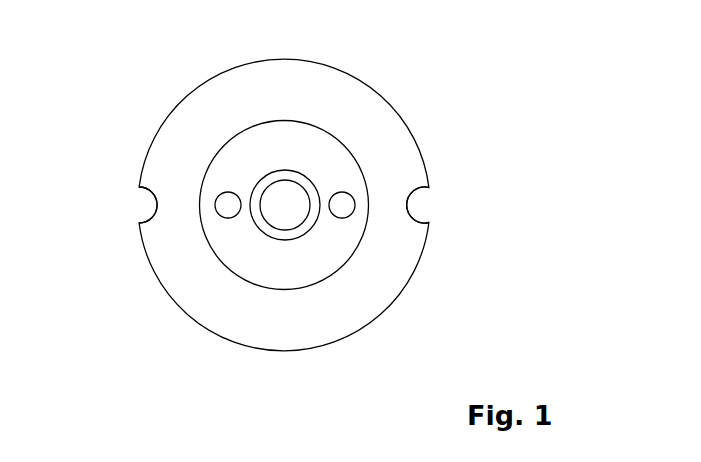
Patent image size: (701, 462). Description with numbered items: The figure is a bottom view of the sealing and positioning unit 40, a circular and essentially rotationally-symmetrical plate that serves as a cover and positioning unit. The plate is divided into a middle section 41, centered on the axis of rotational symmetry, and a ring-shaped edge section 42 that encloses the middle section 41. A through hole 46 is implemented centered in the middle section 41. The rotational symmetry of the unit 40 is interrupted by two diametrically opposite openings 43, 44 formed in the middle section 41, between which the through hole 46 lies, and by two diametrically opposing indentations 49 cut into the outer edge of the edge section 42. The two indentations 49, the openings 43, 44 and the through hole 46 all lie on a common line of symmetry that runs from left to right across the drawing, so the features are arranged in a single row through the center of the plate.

The sealing and positioning unit 40 is at (411, 75).
The middle section 41 is at (284, 205).
The ring-shaped edge section 42 is at (284, 123).
The opening 43 is at (350, 193).
The opening 44 is at (237, 192).
The through hole 46 is at (285, 205).
The indentation 49 is at (150, 192).